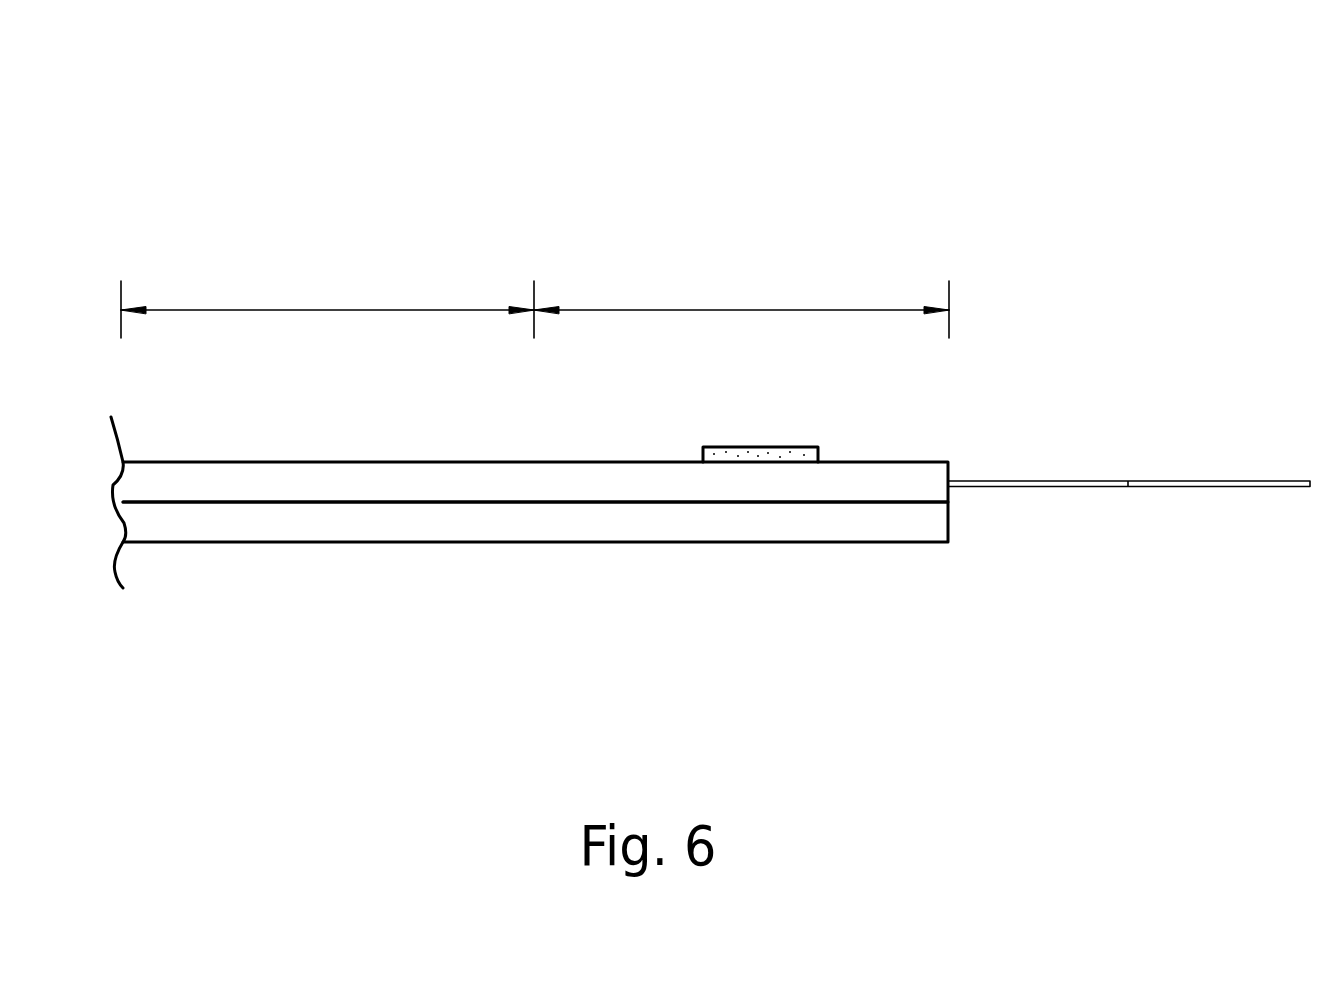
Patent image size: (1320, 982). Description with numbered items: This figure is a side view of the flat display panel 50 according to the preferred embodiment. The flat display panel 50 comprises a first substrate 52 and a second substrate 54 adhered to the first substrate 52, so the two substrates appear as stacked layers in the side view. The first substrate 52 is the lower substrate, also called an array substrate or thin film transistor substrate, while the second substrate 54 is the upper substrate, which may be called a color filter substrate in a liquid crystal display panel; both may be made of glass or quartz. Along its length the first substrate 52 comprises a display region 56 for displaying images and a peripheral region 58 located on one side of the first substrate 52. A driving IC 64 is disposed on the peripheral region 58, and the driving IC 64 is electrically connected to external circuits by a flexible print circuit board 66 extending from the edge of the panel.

The flat display panel 50 is at (963, 143).
The first substrate 52 is at (133, 486).
The second substrate 54 is at (150, 529).
The display region 56 is at (327, 301).
The peripheral region 58 is at (741, 301).
The driving IC 64 is at (763, 447).
The flexible print circuit board 66 is at (1214, 481).